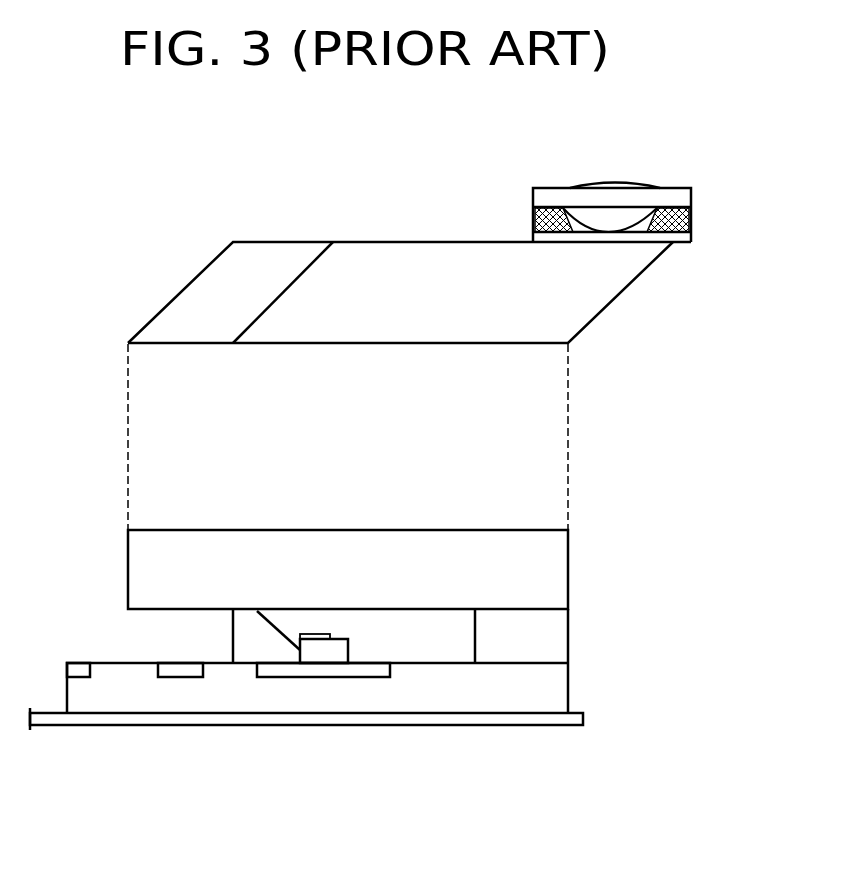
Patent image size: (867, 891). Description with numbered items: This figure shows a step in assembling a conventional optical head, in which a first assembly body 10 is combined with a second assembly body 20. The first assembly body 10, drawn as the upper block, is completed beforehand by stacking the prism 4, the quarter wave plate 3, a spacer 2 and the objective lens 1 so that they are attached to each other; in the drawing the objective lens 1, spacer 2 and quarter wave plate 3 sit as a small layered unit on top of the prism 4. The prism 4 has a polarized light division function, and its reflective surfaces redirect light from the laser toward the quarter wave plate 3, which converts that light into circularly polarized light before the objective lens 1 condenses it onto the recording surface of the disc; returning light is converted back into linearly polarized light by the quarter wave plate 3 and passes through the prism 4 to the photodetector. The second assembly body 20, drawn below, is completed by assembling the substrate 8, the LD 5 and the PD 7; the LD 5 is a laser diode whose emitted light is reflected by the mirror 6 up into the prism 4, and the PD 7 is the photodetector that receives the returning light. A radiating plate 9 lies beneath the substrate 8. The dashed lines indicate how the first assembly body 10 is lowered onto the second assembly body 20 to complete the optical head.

The first assembly body 10 is at (128, 231).
The prism 4 is at (428, 242).
The objective lens 1 is at (692, 197).
The spacer 2 is at (692, 218).
The quarter wave plate 3 is at (692, 240).
The second assembly body 20 is at (92, 539).
The mirror 6 is at (230, 627).
The LD 5 is at (328, 634).
The photodetector 7 is at (178, 677).
The substrate 8 is at (565, 683).
The radiating plate 9 is at (565, 718).